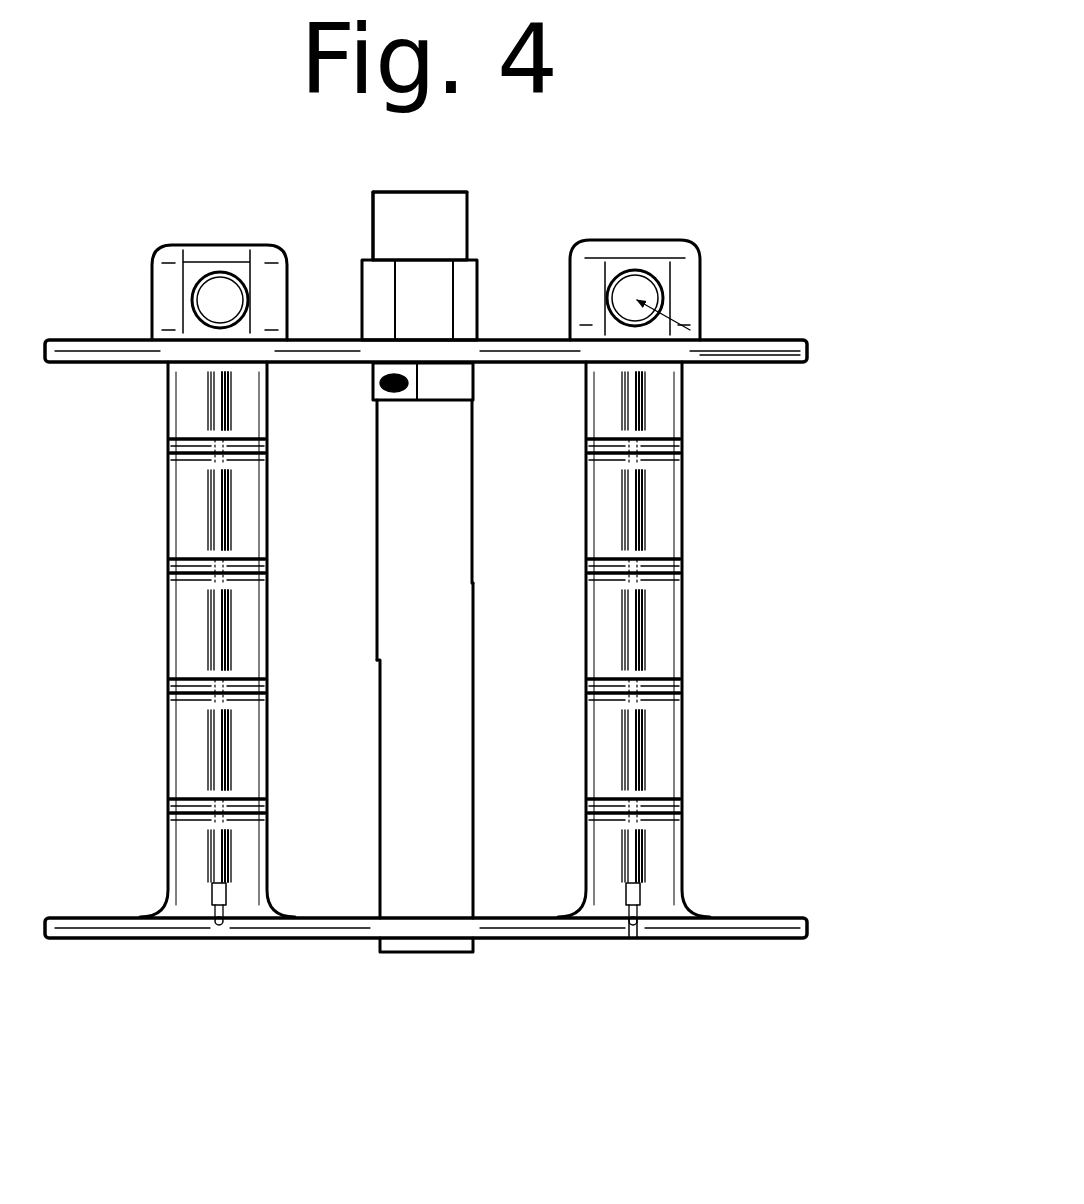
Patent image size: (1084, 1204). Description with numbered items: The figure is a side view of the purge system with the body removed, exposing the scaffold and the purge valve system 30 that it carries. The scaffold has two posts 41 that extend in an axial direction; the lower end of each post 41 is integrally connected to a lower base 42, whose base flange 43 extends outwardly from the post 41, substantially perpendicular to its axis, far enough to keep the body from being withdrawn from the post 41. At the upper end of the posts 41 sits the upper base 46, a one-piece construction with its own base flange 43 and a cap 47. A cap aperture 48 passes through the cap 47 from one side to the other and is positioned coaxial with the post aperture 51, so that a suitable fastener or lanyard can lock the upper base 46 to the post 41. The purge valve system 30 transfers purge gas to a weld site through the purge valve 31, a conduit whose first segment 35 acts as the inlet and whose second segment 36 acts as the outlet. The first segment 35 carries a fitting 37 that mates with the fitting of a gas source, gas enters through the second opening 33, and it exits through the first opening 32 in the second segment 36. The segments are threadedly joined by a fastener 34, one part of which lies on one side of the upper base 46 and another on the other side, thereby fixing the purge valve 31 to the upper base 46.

The purge valve system 30 is at (410, 183).
The purge valve 31 is at (476, 542).
The first opening 32 is at (420, 954).
The second opening 33 is at (370, 190).
The fastener 34 is at (480, 303).
The first segment 35 is at (478, 222).
The second segment 36 is at (477, 673).
The fitting 37 is at (371, 216).
The post 41 is at (690, 578).
The lower base 42 is at (636, 942).
The base flange 43 is at (771, 915).
The upper base 46 is at (812, 338).
The cap 47 is at (706, 255).
The cap aperture 48 is at (611, 277).
The post aperture 51 is at (742, 364).